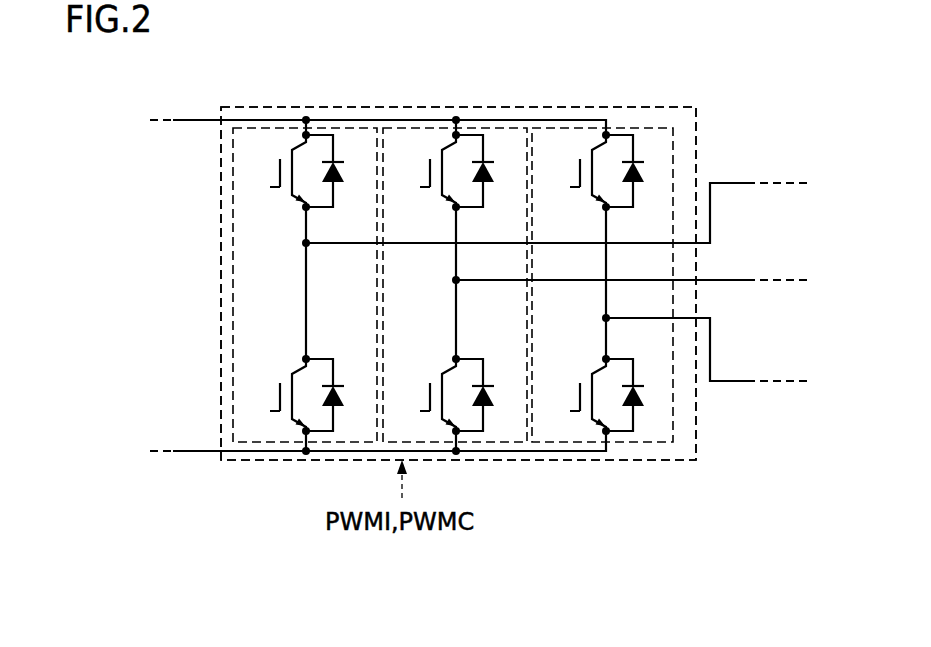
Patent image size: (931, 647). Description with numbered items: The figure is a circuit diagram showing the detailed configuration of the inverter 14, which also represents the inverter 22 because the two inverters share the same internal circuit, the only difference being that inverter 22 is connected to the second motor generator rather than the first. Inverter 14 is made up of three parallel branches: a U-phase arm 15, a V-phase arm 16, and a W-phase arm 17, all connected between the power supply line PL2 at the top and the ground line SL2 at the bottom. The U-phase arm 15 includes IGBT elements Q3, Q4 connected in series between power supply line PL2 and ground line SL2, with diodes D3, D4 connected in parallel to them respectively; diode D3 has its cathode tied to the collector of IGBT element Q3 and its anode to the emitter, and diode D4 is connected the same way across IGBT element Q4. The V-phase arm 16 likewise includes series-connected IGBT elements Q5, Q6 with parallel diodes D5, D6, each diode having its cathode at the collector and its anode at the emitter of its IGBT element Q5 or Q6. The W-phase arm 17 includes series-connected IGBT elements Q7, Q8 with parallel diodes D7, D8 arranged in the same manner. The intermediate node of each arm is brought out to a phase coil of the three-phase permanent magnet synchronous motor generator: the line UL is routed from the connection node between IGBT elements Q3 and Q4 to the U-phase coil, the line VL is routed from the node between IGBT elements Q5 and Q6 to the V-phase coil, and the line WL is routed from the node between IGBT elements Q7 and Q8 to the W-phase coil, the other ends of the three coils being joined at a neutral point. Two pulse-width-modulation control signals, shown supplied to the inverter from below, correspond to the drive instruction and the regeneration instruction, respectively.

The inverter 14 is at (688, 102).
The inverter 22 is at (458, 283).
The U-phase arm 15 is at (347, 128).
The V-phase arm 16 is at (497, 128).
The W-phase arm 17 is at (645, 128).
The IGBT element Q3 is at (275, 171).
The IGBT element Q4 is at (275, 395).
The IGBT element Q5 is at (425, 171).
The IGBT element Q6 is at (425, 395).
The IGBT element Q7 is at (575, 171).
The IGBT element Q8 is at (575, 395).
The diode D3 is at (339, 175).
The diode D4 is at (339, 398).
The diode D5 is at (488, 175).
The diode D6 is at (488, 398).
The diode D7 is at (638, 175).
The diode D8 is at (638, 398).
The power supply line PL2 is at (193, 118).
The ground line SL2 is at (195, 448).
The line UL is at (735, 182).
The line VL is at (737, 278).
The line WL is at (737, 380).